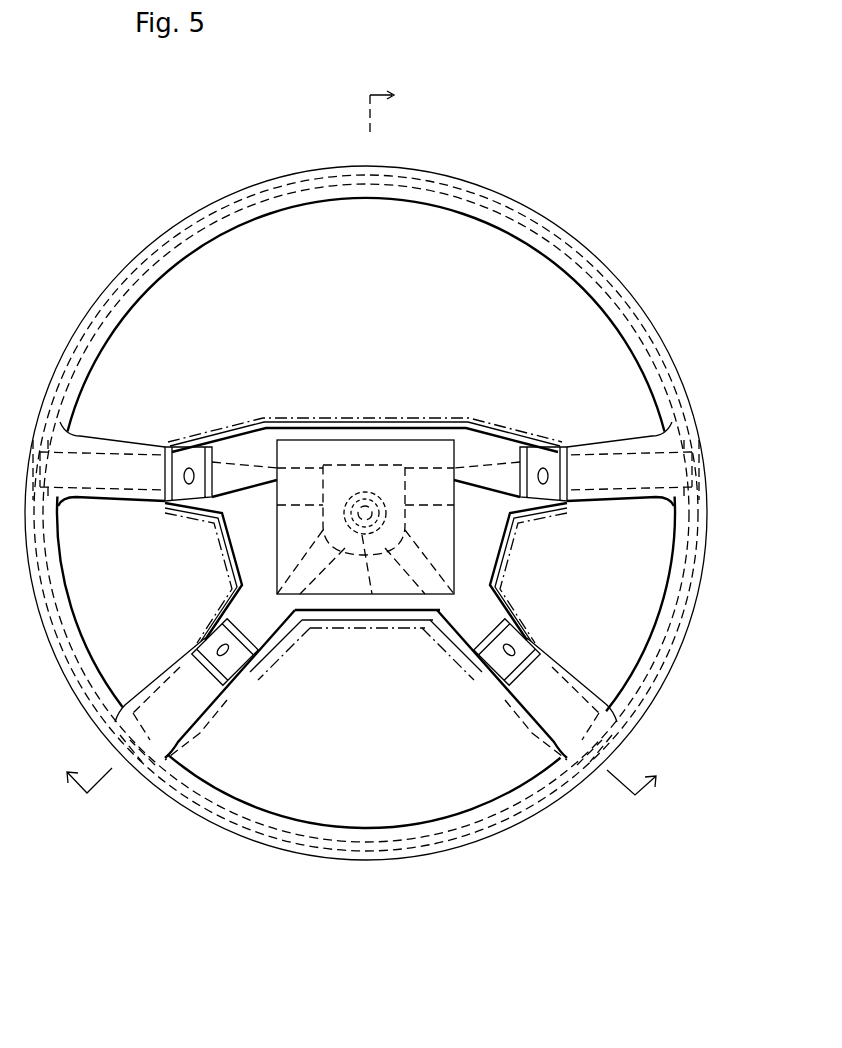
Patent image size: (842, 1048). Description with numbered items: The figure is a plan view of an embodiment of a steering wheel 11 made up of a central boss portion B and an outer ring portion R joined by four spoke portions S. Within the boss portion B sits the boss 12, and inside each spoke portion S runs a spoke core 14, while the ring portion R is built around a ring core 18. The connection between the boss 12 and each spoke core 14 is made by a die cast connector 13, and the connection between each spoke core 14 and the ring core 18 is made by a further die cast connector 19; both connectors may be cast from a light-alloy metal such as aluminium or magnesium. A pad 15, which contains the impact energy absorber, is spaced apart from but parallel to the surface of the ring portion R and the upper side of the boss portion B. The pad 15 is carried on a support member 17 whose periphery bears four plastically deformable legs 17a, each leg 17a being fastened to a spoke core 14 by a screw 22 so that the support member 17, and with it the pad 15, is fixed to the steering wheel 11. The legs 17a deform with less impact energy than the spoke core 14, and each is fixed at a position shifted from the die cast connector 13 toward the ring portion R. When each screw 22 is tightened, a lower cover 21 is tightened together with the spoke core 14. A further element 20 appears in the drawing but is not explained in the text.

The steering wheel 11 is at (567, 104).
The ring portion R is at (553, 207).
The spoke portion S is at (100, 498).
The boss portion B is at (416, 408).
The boss 12 is at (372, 540).
The die cast connector 13 is at (374, 480).
The spoke core 14 is at (100, 468).
The pad 15 is at (308, 452).
The support member 17 is at (307, 462).
The leg 17a is at (258, 455).
The ring core 18 is at (506, 192).
The die cast connector 19 is at (40, 455).
The spoke cover 20 is at (128, 445).
The lower cover 21 is at (235, 538).
The screw 22 is at (190, 466).